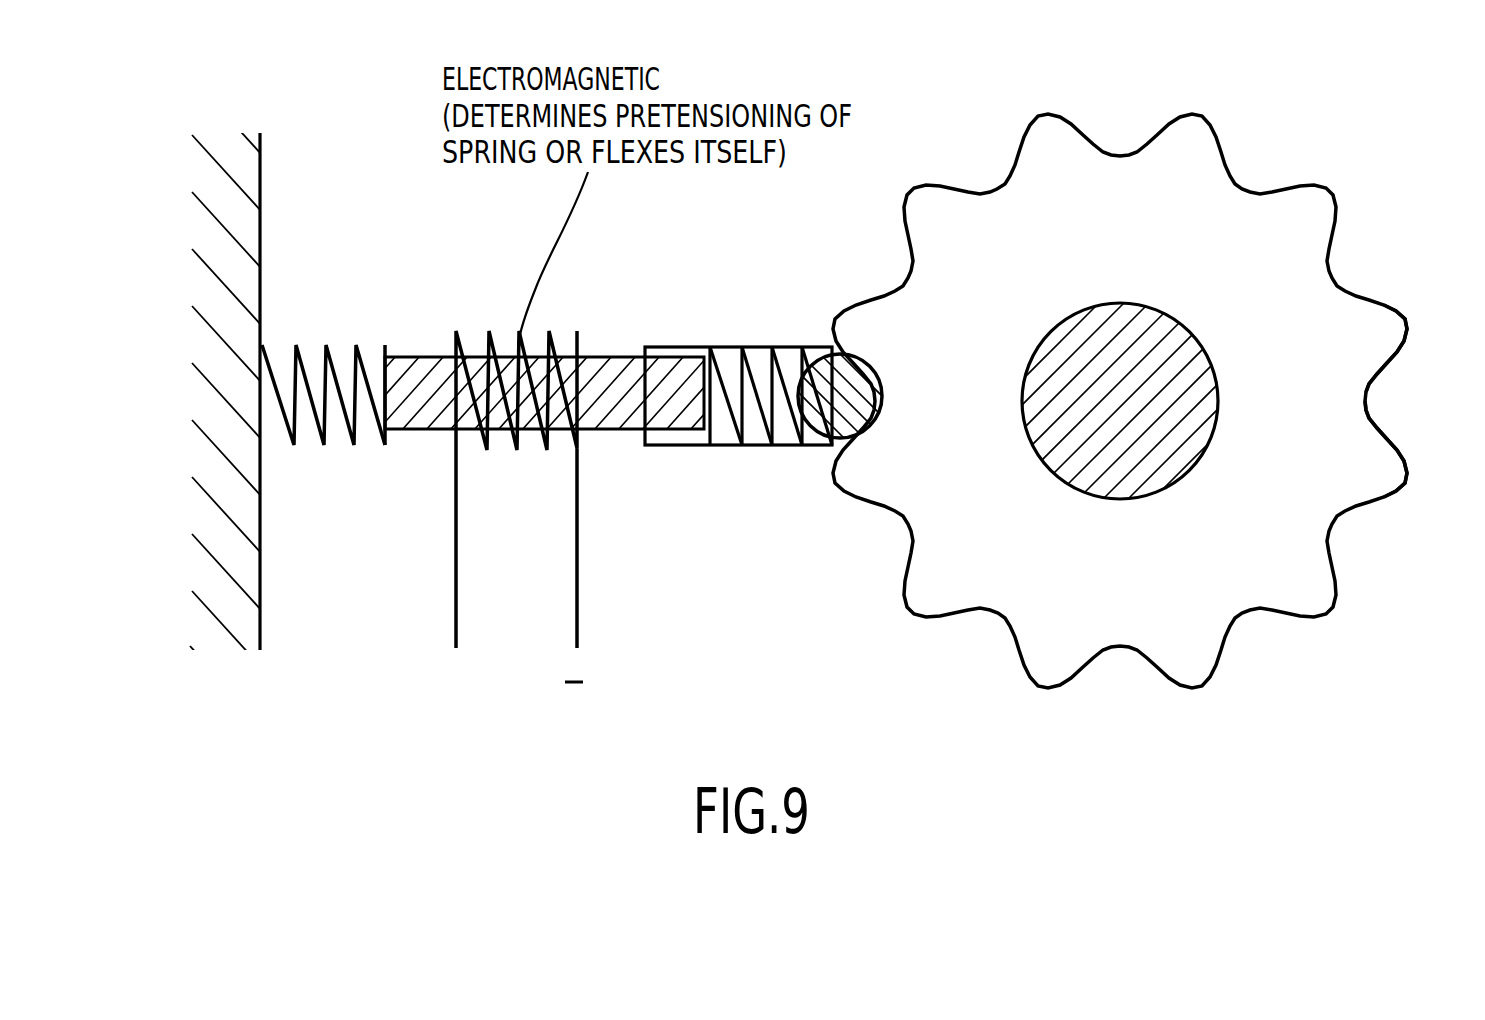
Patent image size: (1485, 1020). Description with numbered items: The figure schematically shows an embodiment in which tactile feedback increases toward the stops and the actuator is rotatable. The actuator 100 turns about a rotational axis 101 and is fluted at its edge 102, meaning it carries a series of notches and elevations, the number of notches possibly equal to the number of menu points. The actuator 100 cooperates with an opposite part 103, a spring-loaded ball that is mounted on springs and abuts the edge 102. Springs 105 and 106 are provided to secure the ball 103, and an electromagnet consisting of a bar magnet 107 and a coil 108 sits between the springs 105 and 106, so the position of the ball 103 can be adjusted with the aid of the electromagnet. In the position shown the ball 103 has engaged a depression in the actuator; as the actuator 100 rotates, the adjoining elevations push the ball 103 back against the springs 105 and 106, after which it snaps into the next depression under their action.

The actuator 100 is at (1221, 212).
The rotational axis 101 is at (1189, 344).
The fluted edge 102 is at (1363, 397).
The opposite part 103 is at (830, 398).
The spring 105 is at (756, 405).
The spring 106 is at (326, 350).
The bar magnet 107 is at (414, 357).
The coil 108 is at (547, 450).